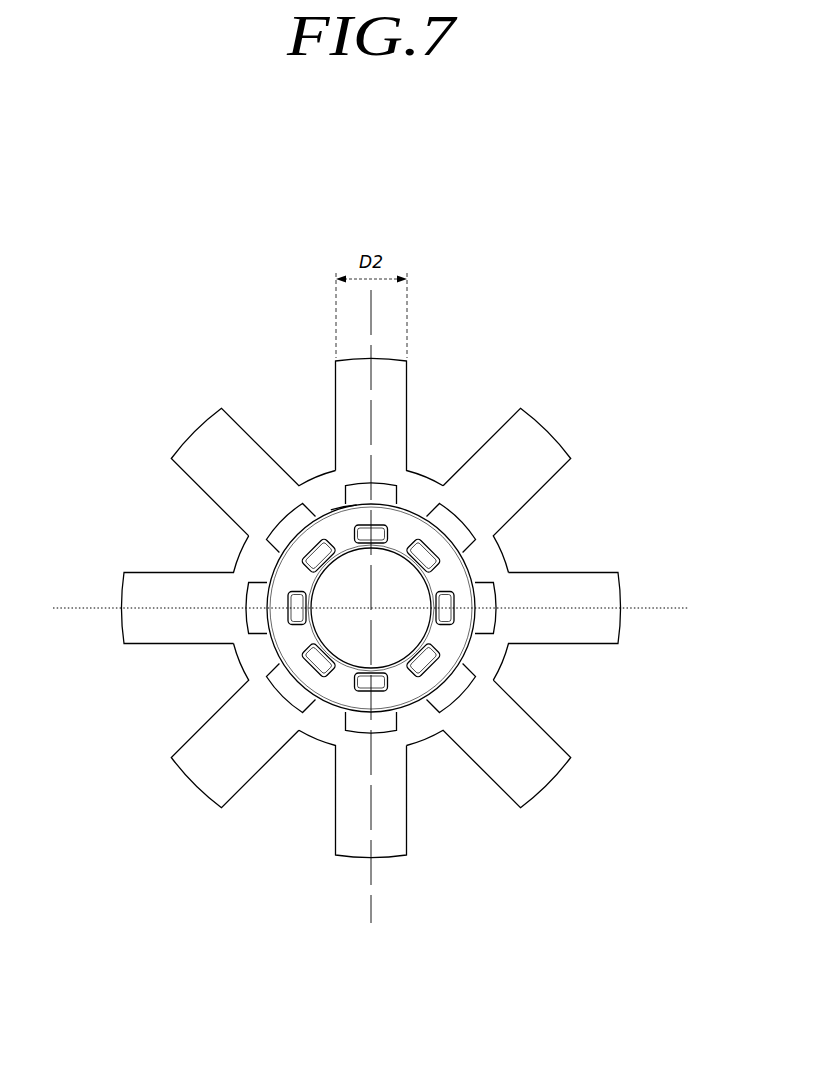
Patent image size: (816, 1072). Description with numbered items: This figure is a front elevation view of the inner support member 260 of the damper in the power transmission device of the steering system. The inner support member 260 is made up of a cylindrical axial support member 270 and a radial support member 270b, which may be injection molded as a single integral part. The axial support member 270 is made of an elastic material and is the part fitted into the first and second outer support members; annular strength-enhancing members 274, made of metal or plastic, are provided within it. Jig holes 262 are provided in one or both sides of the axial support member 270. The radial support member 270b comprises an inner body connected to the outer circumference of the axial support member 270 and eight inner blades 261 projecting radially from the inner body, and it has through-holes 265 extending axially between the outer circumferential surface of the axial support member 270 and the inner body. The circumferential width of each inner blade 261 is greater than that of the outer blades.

The inner support member 260 is at (130, 272).
The inner blades 261 is at (533, 450).
The jig holes 262 is at (410, 680).
The through-holes 265 is at (283, 698).
The axial support member 270 is at (292, 577).
The radial support member 270b is at (323, 492).
The strength-enhancing members 274 is at (330, 678).